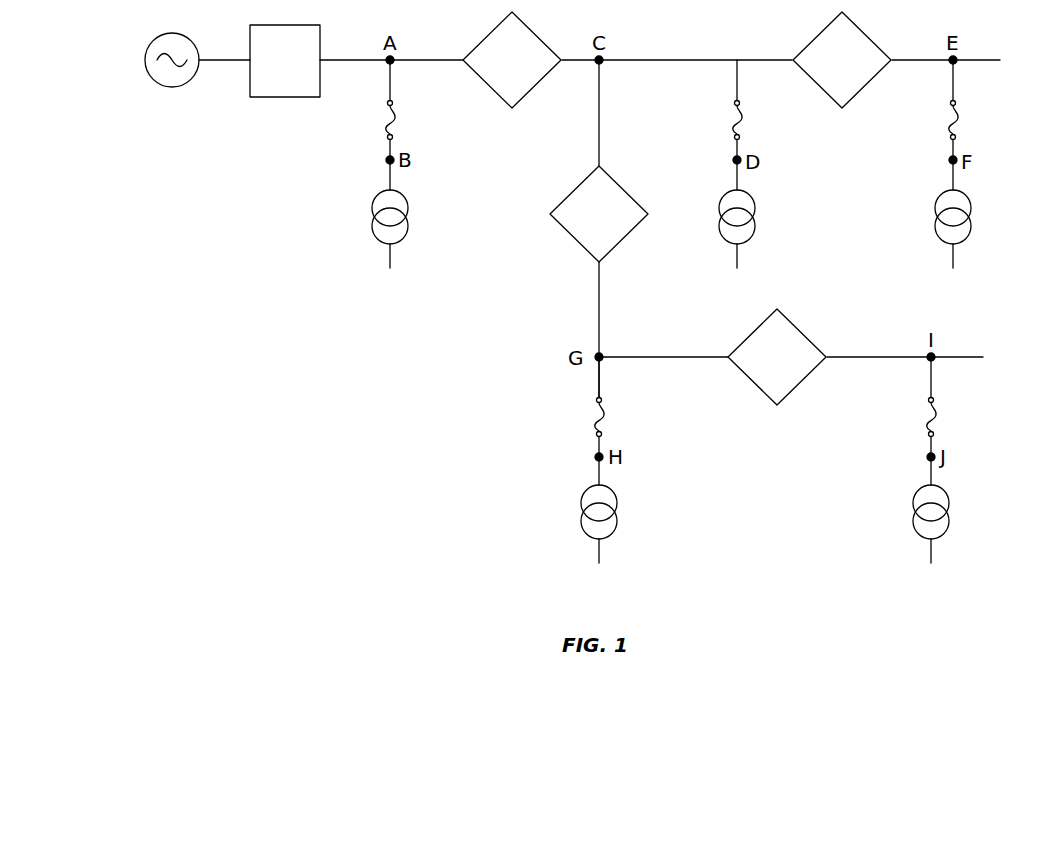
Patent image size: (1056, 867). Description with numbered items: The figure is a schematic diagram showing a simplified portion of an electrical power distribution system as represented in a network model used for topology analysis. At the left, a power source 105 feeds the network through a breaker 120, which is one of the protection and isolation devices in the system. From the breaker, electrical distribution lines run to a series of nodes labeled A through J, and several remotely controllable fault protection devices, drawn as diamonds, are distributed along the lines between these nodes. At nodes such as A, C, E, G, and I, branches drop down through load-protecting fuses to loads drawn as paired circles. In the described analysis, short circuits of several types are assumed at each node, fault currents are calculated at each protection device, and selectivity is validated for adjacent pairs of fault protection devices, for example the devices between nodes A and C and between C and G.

The power source 105 is at (163, 84).
The breaker 120 is at (270, 70).